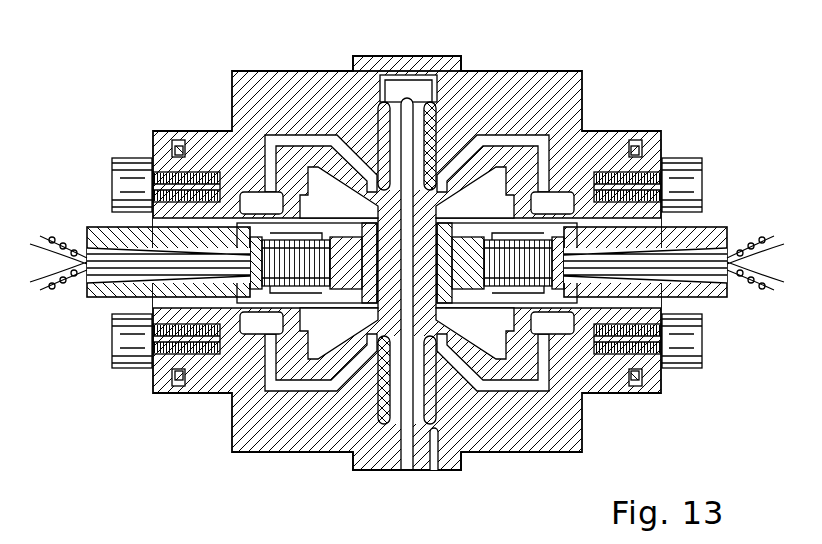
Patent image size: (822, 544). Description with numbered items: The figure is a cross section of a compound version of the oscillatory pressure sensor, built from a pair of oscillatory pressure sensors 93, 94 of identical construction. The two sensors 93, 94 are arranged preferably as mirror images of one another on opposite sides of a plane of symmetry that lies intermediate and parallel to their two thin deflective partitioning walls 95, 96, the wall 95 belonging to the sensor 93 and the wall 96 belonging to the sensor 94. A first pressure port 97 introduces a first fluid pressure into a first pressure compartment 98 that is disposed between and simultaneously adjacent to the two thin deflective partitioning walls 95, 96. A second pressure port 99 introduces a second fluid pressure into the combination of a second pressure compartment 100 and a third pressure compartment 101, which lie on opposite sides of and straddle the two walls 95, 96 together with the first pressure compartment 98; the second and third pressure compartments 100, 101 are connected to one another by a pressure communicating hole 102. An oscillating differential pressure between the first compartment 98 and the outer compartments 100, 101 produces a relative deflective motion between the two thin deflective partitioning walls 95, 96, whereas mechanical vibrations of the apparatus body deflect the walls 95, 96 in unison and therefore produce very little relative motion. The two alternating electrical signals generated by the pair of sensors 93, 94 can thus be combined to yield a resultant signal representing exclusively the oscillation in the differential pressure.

The oscillatory pressure sensor 93 is at (108, 220).
The oscillatory pressure sensor 94 is at (711, 223).
The thin deflective partitioning wall 95 is at (403, 133).
The thin deflective partitioning wall 96 is at (428, 163).
The first pressure port 97 is at (405, 472).
The first pressure compartment 98 is at (386, 155).
The second pressure port 99 is at (432, 472).
The second pressure compartment 100 is at (357, 380).
The third pressure compartment 101 is at (453, 380).
The pressure communicating hole 102 is at (407, 76).